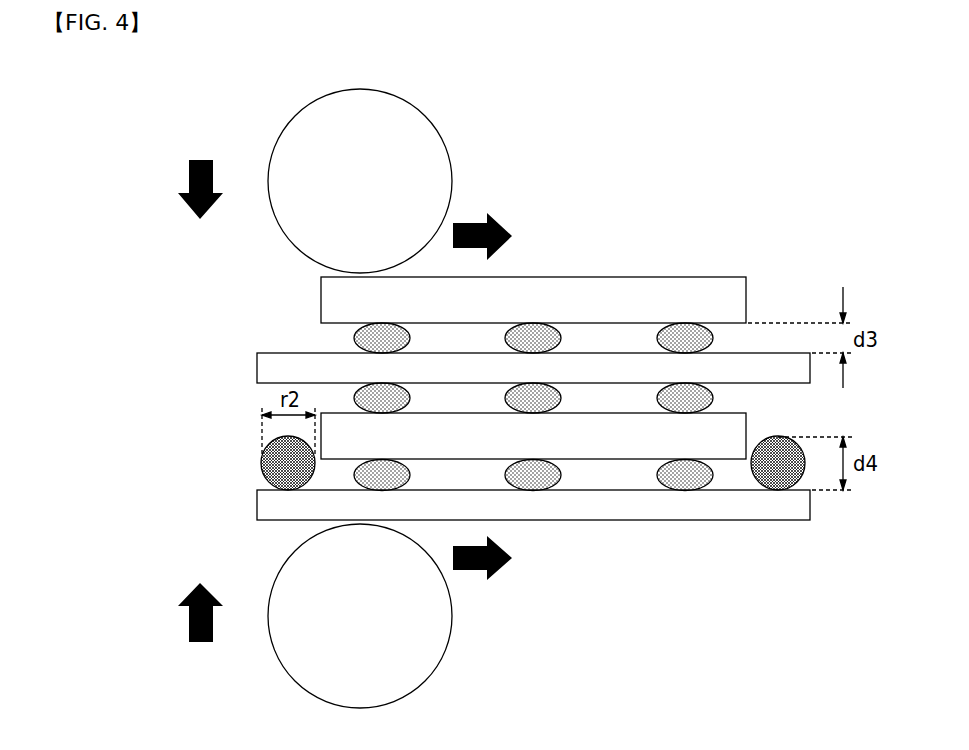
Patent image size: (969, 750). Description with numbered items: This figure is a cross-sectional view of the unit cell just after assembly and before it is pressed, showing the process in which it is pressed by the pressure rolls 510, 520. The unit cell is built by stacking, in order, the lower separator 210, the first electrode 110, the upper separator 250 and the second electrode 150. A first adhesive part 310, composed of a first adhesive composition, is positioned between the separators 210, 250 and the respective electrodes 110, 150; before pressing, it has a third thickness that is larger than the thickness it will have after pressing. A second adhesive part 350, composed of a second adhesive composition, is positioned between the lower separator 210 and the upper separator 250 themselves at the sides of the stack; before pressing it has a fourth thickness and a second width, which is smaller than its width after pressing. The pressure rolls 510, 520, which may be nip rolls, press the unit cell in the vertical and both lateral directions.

The first electrode 110 is at (608, 438).
The second electrode 150 is at (338, 300).
The lower separator 210 is at (270, 502).
The upper separator 250 is at (270, 367).
The first adhesive part 310 is at (721, 330).
The second adhesive part 350 is at (277, 452).
The pressure roll 510 is at (314, 122).
The pressure roll 520 is at (314, 674).